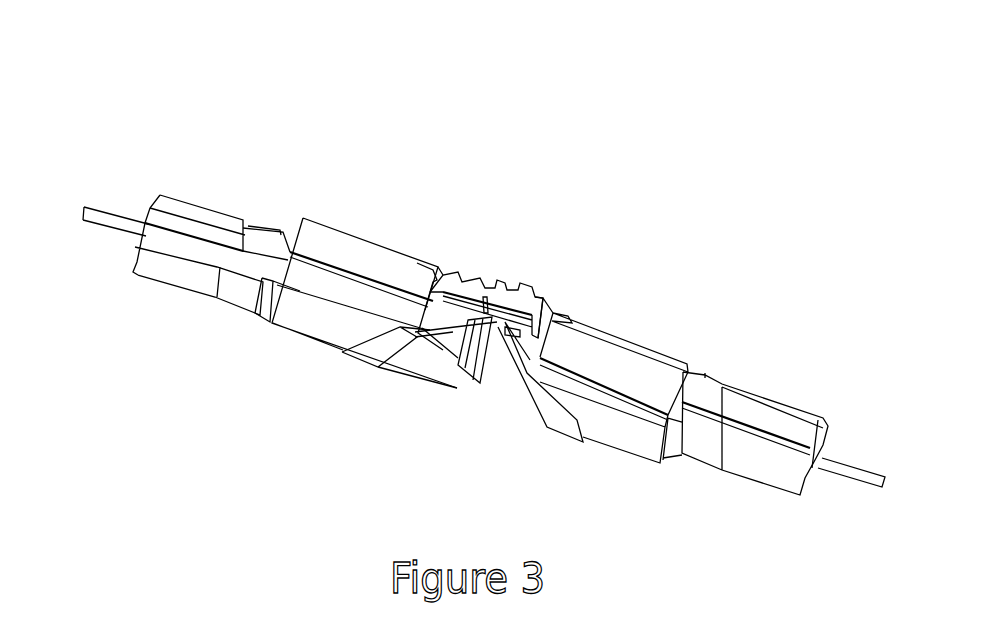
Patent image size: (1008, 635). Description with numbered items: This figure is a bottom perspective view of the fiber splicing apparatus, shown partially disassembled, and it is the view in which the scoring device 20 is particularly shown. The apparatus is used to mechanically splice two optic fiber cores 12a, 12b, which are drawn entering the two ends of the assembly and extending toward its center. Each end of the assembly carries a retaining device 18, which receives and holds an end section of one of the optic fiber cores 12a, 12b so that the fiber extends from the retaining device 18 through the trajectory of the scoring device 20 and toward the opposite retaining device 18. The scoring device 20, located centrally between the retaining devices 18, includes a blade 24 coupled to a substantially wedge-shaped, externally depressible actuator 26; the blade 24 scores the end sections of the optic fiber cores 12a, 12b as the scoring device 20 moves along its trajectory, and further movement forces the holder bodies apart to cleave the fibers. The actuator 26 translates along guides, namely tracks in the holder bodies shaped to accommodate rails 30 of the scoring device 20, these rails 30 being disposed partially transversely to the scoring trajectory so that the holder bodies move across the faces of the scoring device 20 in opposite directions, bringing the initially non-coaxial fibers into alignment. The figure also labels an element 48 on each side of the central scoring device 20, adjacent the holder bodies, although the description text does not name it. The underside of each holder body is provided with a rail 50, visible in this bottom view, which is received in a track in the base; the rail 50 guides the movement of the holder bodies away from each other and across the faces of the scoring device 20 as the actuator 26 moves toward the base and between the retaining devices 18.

The optic fiber core 12a is at (863, 476).
The optic fiber core 12b is at (100, 218).
The retaining device 18 is at (215, 237).
The scoring device 20 is at (497, 278).
The blade 24 is at (466, 340).
The actuator 26 is at (430, 372).
The rail 30 is at (458, 265).
The ferrule 48 is at (449, 272).
The rail 50 is at (353, 262).